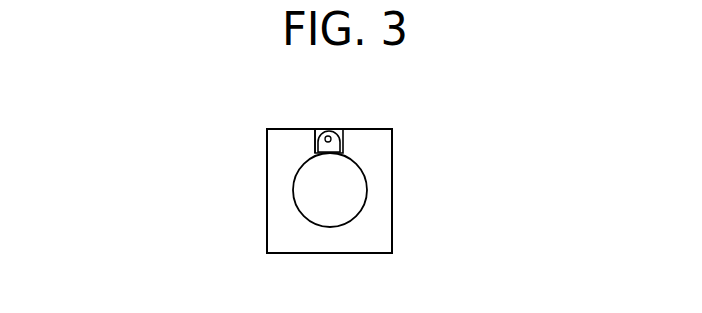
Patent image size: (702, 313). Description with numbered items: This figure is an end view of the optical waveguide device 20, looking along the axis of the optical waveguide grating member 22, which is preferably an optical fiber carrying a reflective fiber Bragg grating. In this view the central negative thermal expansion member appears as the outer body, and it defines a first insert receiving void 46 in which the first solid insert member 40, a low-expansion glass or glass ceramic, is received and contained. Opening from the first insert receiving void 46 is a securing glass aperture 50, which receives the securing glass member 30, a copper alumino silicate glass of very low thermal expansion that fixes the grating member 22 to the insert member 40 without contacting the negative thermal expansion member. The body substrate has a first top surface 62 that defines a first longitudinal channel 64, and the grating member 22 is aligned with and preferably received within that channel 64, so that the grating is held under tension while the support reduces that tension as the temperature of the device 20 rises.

The optical waveguide device 20 is at (210, 200).
The optical waveguide grating member 22 is at (333, 133).
The securing glass member 30 is at (321, 133).
The first solid insert member 40 is at (321, 200).
The first insert receiving void 46 is at (372, 192).
The securing glass aperture 50 is at (313, 123).
The first top surface 62 is at (384, 126).
The first longitudinal channel 64 is at (310, 104).